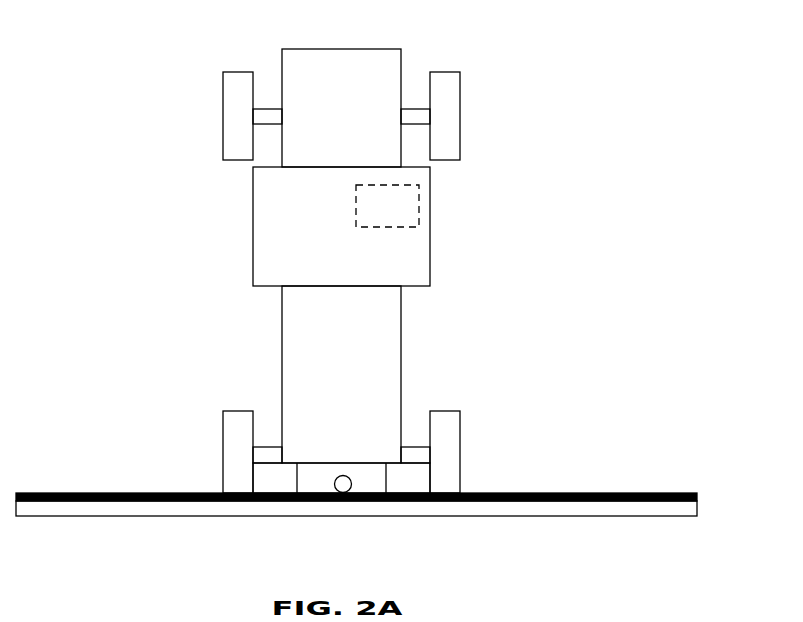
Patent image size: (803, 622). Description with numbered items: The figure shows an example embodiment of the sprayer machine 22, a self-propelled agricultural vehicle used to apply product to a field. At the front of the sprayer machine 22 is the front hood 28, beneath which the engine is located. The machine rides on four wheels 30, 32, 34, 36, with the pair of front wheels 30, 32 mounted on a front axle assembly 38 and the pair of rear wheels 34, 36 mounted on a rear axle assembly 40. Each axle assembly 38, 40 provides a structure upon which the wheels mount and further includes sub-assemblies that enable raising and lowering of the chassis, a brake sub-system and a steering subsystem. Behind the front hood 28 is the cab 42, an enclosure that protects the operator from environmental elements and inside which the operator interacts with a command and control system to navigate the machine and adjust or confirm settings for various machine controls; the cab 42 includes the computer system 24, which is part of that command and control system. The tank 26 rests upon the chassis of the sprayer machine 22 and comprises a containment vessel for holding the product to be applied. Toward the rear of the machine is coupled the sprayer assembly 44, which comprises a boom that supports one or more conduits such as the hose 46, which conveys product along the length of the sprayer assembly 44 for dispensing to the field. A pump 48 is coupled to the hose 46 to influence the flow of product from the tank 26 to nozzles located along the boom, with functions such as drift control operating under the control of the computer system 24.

The sprayer machine 22 is at (114, 43).
The computer system 24 is at (419, 205).
The tank 26 is at (282, 352).
The front hood 28 is at (304, 49).
The front wheel 30 is at (223, 115).
The front wheel 32 is at (460, 115).
The rear wheel 34 is at (237, 411).
The rear wheel 36 is at (445, 411).
The axle assembly 38 is at (416, 109).
The axle assembly 40 is at (416, 445).
The cab 42 is at (253, 227).
The sprayer assembly 44 is at (364, 478).
The hose 46 is at (592, 493).
The pump 48 is at (340, 476).